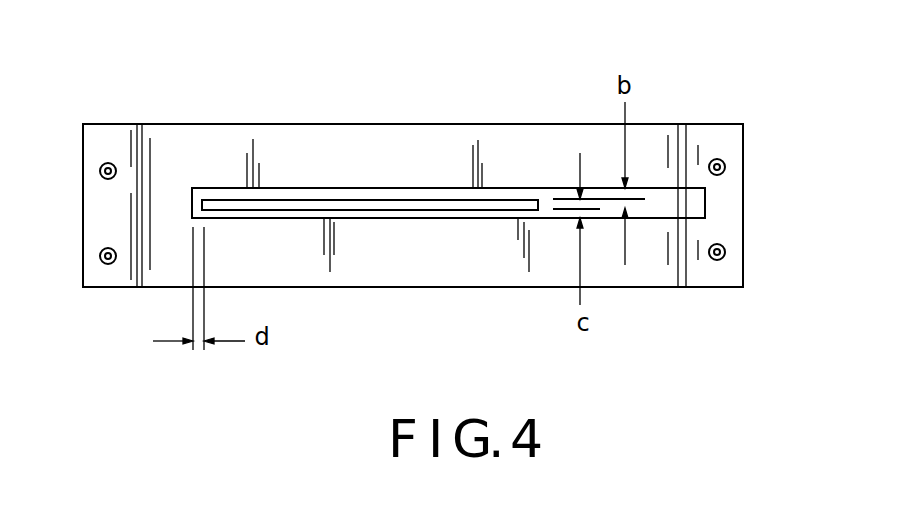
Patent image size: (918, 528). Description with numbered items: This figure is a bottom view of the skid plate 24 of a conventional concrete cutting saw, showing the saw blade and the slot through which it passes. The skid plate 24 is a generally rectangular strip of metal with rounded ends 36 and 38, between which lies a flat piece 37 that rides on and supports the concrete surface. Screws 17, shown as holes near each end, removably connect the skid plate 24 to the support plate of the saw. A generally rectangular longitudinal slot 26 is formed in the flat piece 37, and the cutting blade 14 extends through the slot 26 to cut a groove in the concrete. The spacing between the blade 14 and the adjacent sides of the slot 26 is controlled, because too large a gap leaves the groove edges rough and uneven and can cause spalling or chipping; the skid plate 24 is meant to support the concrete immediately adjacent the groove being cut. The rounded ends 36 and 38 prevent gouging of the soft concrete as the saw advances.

The skid plate 24 is at (512, 123).
The cutting blade 14 is at (283, 197).
The longitudinal slot 26 is at (360, 218).
The flat piece 37 is at (408, 147).
The rounded end 36 is at (142, 127).
The rounded end 38 is at (683, 123).
The screws 17 is at (725, 164).